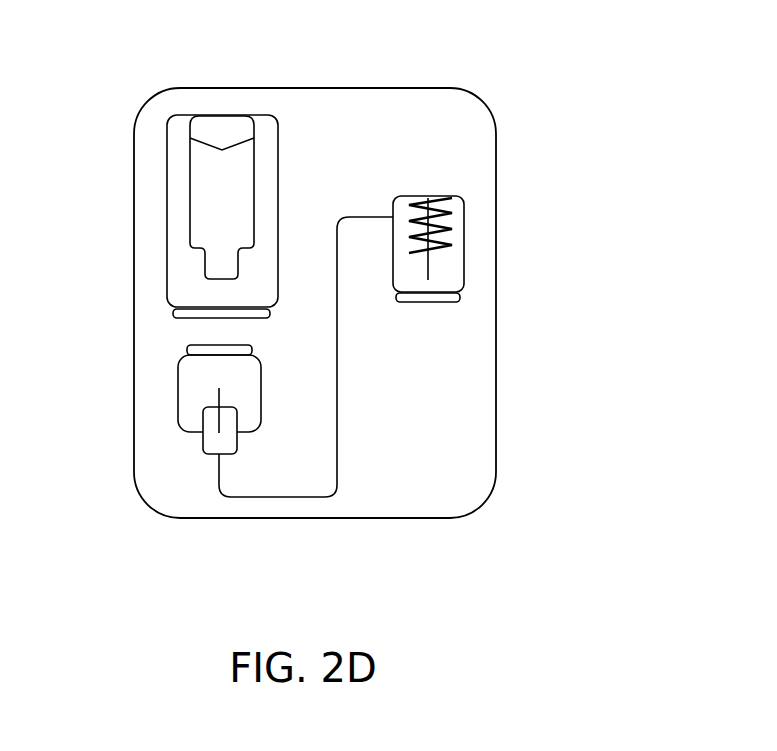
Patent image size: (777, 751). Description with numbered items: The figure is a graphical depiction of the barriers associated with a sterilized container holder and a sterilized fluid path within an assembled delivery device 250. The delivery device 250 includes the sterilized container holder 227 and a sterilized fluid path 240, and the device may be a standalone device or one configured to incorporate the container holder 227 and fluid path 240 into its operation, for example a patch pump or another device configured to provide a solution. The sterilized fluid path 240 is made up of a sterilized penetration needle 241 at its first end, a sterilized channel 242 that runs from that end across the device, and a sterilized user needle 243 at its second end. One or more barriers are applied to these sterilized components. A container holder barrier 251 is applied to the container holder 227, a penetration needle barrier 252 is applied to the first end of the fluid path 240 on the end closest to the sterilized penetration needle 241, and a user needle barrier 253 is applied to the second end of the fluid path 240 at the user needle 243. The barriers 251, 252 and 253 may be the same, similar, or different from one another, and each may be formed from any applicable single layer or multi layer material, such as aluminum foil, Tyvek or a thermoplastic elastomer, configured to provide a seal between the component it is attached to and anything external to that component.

The delivery device 250 is at (402, 102).
The sterilized container holder 227 is at (207, 194).
The container holder barrier 251 is at (181, 320).
The penetration needle barrier 252 is at (190, 350).
The sterilized penetration needle 241 is at (195, 415).
The sterilized channel 242 is at (297, 500).
The sterilized user needle 243 is at (453, 267).
The user needle barrier 253 is at (426, 302).
The sterilized fluid path 240 is at (362, 420).